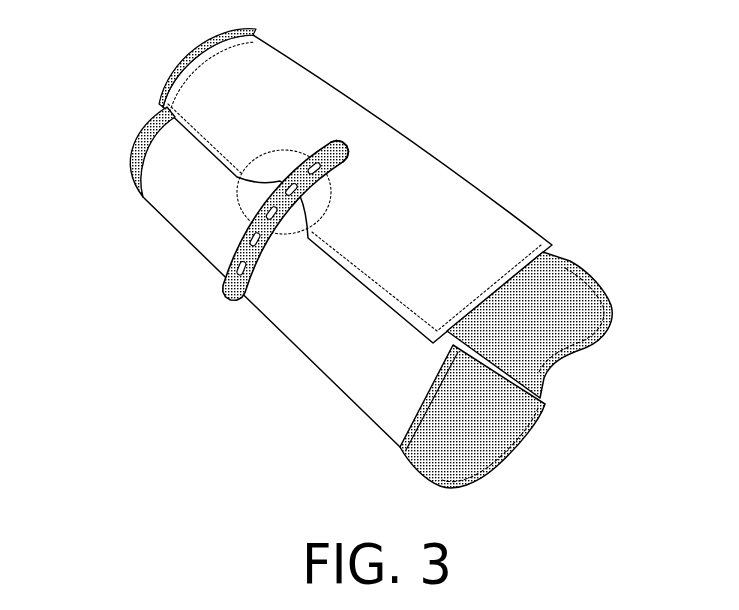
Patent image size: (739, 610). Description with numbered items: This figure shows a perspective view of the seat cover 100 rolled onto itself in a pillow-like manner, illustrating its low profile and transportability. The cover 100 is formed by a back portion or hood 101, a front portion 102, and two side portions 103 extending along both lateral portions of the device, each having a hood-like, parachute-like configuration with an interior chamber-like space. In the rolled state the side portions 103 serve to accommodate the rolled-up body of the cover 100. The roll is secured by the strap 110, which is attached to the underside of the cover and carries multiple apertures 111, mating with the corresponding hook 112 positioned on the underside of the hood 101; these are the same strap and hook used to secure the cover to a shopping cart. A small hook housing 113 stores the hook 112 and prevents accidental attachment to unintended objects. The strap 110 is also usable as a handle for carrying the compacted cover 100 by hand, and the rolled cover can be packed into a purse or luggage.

The seat cover 100 is at (98, 97).
The hood 101 is at (503, 214).
The front portion 102 is at (318, 348).
The side portions 103 is at (587, 317).
The strap 110 is at (225, 281).
The apertures 111 is at (242, 233).
The hook 112 is at (323, 165).
The hook housing 113 is at (285, 157).